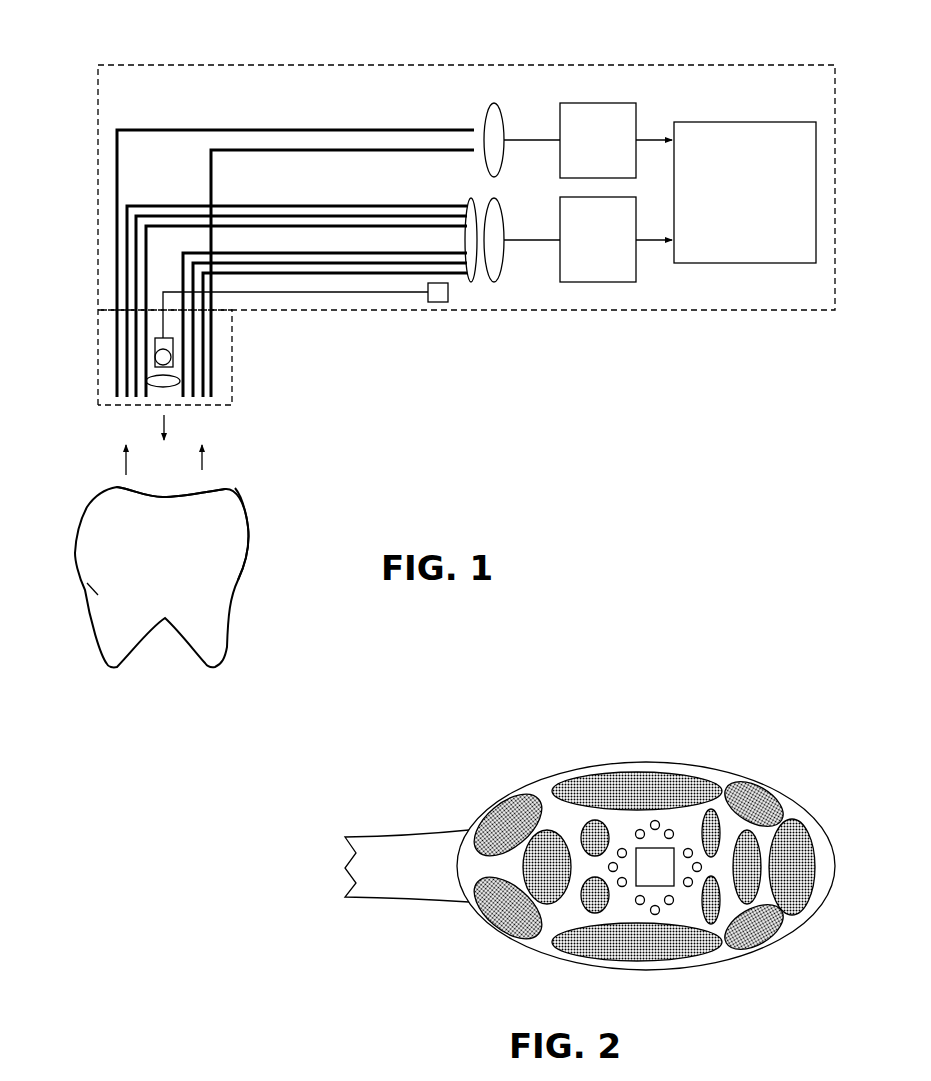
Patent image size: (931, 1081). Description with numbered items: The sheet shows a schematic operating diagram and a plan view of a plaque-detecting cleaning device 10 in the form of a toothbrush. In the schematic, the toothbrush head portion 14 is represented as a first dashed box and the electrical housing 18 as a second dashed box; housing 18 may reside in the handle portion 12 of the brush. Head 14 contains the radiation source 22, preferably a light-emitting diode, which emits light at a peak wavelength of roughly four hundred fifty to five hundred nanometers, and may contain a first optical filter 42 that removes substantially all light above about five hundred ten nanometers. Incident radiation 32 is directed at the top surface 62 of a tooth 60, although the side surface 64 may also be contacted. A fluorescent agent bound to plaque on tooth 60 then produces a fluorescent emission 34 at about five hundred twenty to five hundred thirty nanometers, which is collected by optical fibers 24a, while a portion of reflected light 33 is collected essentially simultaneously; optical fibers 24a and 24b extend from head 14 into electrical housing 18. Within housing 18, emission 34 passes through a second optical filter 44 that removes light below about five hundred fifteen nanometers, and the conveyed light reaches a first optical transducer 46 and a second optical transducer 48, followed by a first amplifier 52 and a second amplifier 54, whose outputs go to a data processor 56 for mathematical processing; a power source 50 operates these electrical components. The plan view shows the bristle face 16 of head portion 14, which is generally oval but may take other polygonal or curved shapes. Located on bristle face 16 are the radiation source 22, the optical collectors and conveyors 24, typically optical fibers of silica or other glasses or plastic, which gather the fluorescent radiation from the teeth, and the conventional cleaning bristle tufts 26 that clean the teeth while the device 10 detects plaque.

In FIG. 2, the device 10 is at (500, 752).
In FIG. 2, the handle portion 12 is at (392, 838).
In FIG. 1, the head portion 14 is at (80, 348).
In FIG. 2, the head portion 14 is at (568, 962).
In FIG. 2, the bristle face 16 is at (543, 943).
In FIG. 1, the electrical housing 18 is at (195, 42).
In FIG. 1, the radiation source 22 is at (160, 358).
In FIG. 2, the radiation source 22 is at (656, 867).
In FIG. 2, the optical collectors and conveyors 24 is at (671, 831).
In FIG. 1, the optical fibers 24a is at (288, 253).
In FIG. 1, the optical fibers 24b is at (268, 150).
In FIG. 2, the bristle tufts 26 is at (797, 837).
In FIG. 1, the incident radiation 32 is at (164, 422).
In FIG. 1, the reflected light 33 is at (126, 465).
In FIG. 1, the fluorescent emission 34 is at (203, 460).
In FIG. 1, the first optical filter 42 is at (165, 385).
In FIG. 1, the second optical filter 44 is at (476, 266).
In FIG. 1, the first optical transducer 46 is at (497, 262).
In FIG. 1, the second optical transducer 48 is at (501, 113).
In FIG. 1, the power source 50 is at (432, 303).
In FIG. 1, the first amplifier 52 is at (617, 263).
In FIG. 1, the second amplifier 54 is at (625, 122).
In FIG. 1, the data processor 56 is at (740, 245).
In FIG. 1, the tooth 60 is at (72, 520).
In FIG. 1, the top surface 62 is at (227, 488).
In FIG. 1, the side surface 64 is at (250, 538).